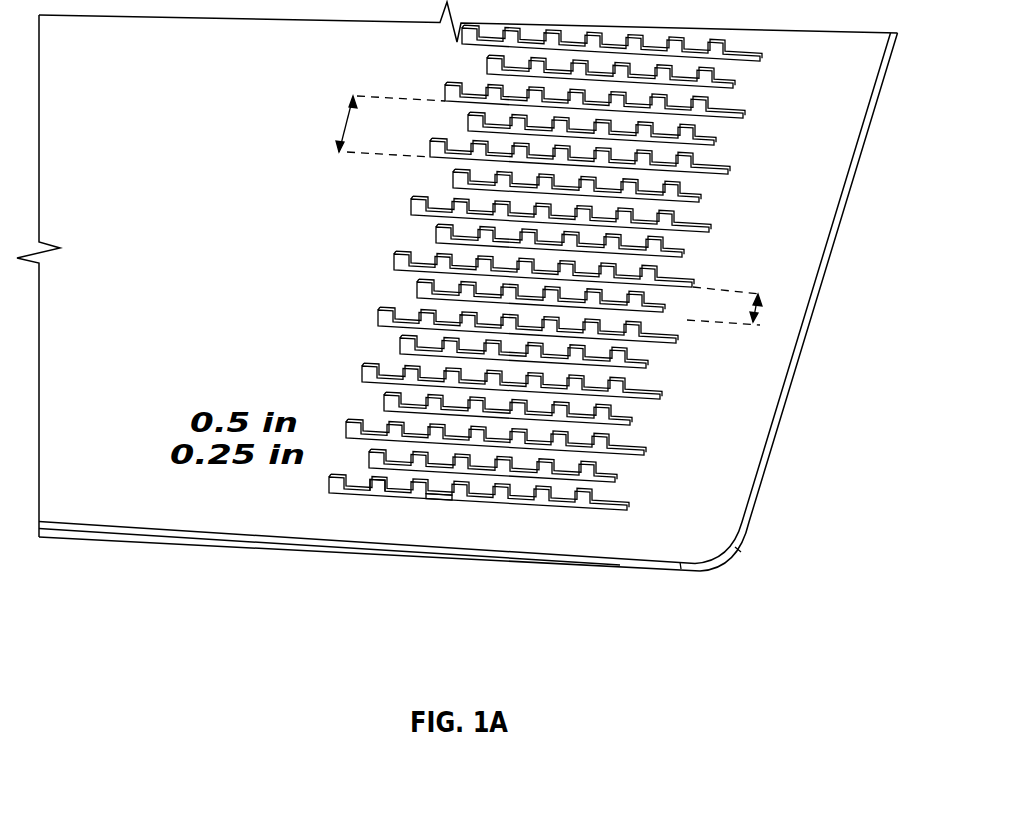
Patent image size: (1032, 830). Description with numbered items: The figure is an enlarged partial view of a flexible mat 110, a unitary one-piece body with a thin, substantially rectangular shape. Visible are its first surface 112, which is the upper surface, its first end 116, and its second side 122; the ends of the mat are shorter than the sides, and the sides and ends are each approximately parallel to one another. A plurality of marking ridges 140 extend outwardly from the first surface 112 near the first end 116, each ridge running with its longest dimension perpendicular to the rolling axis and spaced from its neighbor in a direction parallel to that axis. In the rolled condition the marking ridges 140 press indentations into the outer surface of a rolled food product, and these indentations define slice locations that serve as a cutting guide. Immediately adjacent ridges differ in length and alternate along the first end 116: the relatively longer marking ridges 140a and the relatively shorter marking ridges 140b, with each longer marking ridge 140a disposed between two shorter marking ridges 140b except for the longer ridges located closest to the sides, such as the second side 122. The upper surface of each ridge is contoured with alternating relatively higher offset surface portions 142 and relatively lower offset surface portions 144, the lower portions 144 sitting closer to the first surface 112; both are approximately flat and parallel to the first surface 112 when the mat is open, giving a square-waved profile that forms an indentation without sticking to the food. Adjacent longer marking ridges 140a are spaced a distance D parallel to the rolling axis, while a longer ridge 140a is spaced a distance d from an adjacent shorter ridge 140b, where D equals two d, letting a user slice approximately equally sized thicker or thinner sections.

The flexible mat 110 is at (765, 403).
The first surface 112 is at (853, 113).
The first end 116 is at (833, 257).
The second side 122 is at (228, 542).
The marking ridges 140 is at (554, 333).
The relatively longer marking ridge 140a is at (392, 263).
The relatively shorter marking ridge 140b is at (416, 292).
The relatively higher offset surface portions 142 is at (372, 492).
The relatively lower offset surface portions 144 is at (444, 498).
The distance between adjacent longer marking ridges D is at (345, 124).
The distance between adjacent longer and shorter marking ridges d is at (757, 312).